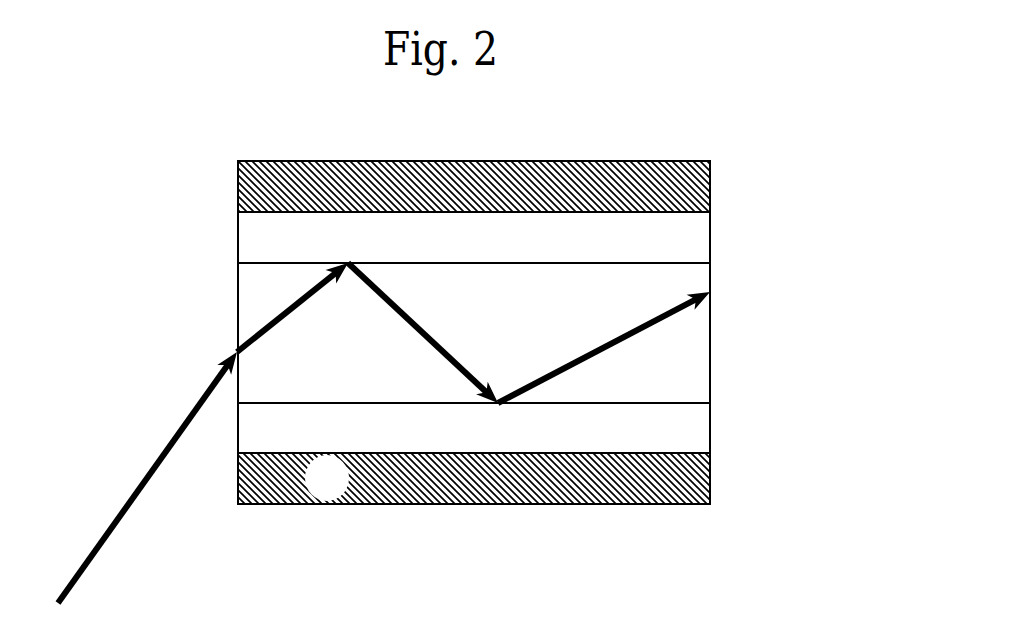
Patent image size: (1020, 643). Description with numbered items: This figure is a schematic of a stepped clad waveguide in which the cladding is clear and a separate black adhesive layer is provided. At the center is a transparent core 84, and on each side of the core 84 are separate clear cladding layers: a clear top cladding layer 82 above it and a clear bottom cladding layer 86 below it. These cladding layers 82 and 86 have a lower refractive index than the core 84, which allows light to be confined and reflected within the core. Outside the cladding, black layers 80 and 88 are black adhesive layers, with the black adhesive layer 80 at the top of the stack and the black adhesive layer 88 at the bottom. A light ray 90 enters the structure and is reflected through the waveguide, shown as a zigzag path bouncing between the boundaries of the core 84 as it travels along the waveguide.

The black adhesive layer 80 is at (533, 162).
The clear top cladding layer 82 is at (552, 234).
The transparent core 84 is at (559, 333).
The clear bottom cladding layer 86 is at (559, 423).
The black adhesive layer 88 is at (532, 478).
The light ray 90 is at (147, 477).